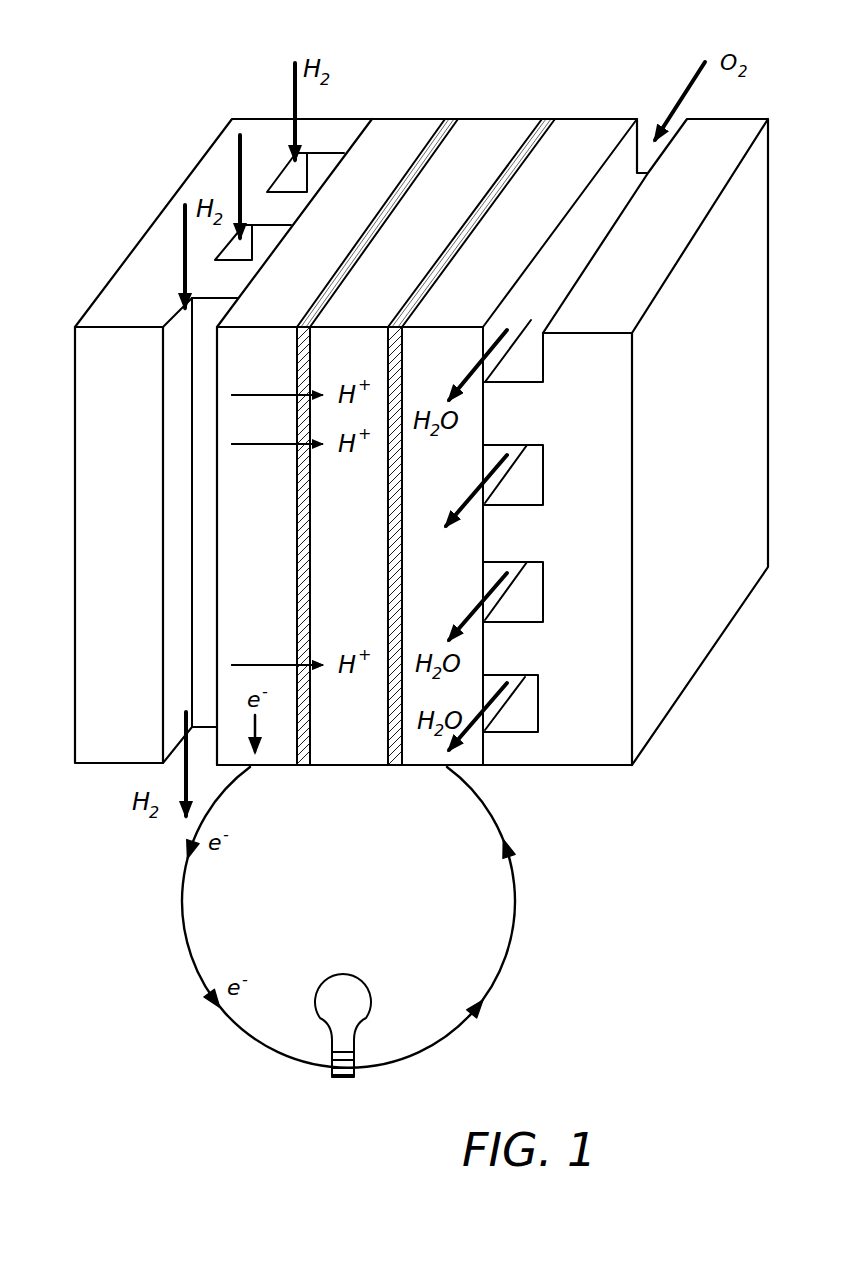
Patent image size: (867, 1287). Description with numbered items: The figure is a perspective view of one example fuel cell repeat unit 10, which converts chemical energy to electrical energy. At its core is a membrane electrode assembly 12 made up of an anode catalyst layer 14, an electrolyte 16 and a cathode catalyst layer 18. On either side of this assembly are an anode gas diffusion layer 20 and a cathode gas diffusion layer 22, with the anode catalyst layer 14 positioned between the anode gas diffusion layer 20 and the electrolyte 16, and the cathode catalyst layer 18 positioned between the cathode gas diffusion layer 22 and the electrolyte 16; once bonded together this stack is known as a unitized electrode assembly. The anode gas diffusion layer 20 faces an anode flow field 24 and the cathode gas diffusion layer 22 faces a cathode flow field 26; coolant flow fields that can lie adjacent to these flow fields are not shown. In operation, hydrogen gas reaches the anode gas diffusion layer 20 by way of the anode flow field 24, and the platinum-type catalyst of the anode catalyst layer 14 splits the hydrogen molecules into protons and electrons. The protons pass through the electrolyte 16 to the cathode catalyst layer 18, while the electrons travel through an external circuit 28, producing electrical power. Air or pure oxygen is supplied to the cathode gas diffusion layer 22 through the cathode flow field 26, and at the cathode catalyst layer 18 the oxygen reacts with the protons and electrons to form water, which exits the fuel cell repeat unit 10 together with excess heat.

The fuel cell repeat unit 10 is at (112, 122).
The membrane electrode assembly 12 is at (558, 117).
The anode catalyst layer 14 is at (393, 205).
The electrolyte 16 is at (500, 153).
The cathode catalyst layer 18 is at (462, 237).
The anode gas diffusion layer 20 is at (400, 153).
The cathode gas diffusion layer 22 is at (595, 153).
The anode flow field 24 is at (324, 166).
The cathode flow field 26 is at (533, 483).
The external circuit 28 is at (182, 927).